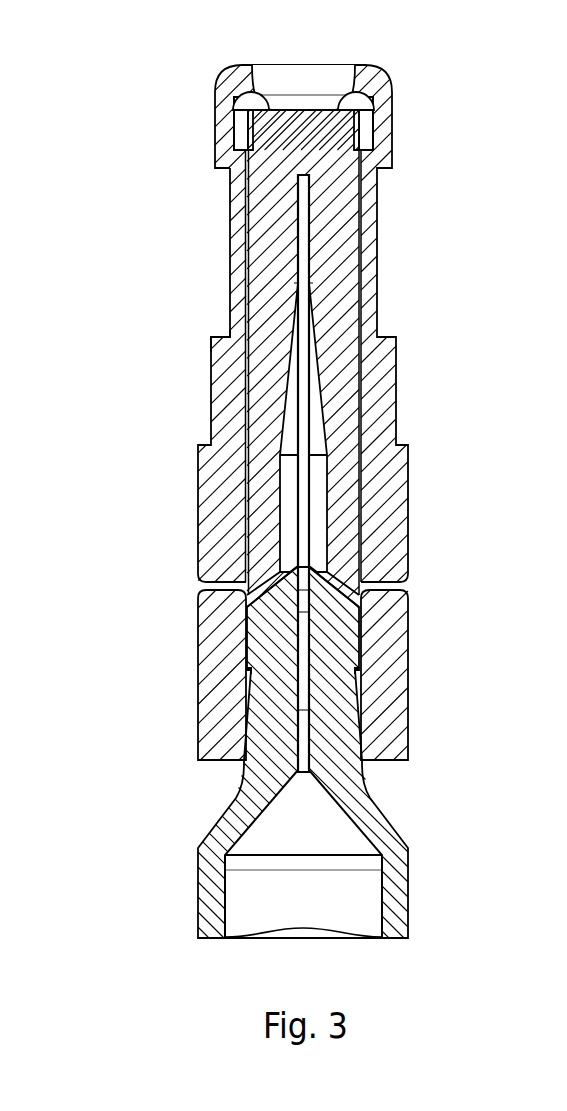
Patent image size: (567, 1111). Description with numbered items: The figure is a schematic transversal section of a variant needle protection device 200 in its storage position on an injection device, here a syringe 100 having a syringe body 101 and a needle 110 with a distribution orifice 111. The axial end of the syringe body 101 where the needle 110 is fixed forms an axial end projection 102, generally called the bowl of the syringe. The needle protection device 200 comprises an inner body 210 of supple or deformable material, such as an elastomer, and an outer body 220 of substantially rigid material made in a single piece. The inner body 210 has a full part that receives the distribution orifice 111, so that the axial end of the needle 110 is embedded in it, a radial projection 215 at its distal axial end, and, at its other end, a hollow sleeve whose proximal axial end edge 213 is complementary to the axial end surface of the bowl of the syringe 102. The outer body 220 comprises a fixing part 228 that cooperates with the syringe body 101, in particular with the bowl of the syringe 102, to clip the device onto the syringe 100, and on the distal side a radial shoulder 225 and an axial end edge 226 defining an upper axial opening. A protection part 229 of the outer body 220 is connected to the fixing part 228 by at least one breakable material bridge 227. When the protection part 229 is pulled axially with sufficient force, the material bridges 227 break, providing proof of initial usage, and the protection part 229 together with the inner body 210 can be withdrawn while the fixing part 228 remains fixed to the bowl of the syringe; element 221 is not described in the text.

The syringe 100 is at (426, 868).
The syringe body 101 is at (207, 884).
The axial end projection 102 is at (368, 634).
The needle 110 is at (308, 385).
The distribution orifice 111 is at (377, 173).
The needle protection device 200 is at (390, 316).
The inner body 210 is at (277, 232).
The proximal axial end edge 213 is at (355, 556).
The radial projection 215 is at (270, 128).
The outer body 220 is at (377, 257).
The notch 221 is at (362, 678).
The radial shoulder 225 is at (370, 146).
The axial end edge 226 is at (240, 72).
The breakable material bridge 227 is at (242, 583).
The fixing part 228 is at (218, 663).
The protection part 229 is at (222, 355).